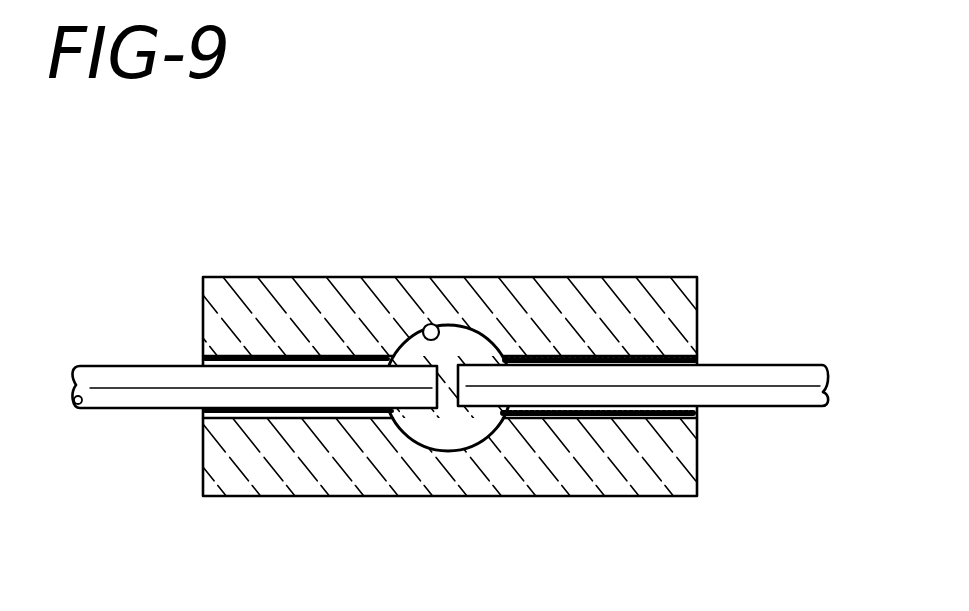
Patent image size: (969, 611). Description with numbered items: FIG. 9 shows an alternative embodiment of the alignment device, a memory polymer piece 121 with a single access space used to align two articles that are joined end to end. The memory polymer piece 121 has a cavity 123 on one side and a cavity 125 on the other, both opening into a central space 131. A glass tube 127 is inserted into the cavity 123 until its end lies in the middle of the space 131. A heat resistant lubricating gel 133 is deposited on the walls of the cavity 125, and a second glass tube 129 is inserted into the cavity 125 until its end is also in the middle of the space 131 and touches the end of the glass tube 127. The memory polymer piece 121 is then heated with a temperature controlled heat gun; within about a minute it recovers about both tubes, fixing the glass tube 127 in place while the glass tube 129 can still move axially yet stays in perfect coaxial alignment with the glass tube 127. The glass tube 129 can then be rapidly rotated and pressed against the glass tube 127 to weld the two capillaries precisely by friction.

The memory polymer piece 121 is at (547, 277).
The cavity 123 is at (195, 412).
The cavity 125 is at (567, 416).
The glass tube 127 is at (137, 380).
The glass tube 129 is at (780, 393).
The space 131 is at (421, 334).
The heat resistant lubricating gel 133 is at (697, 358).